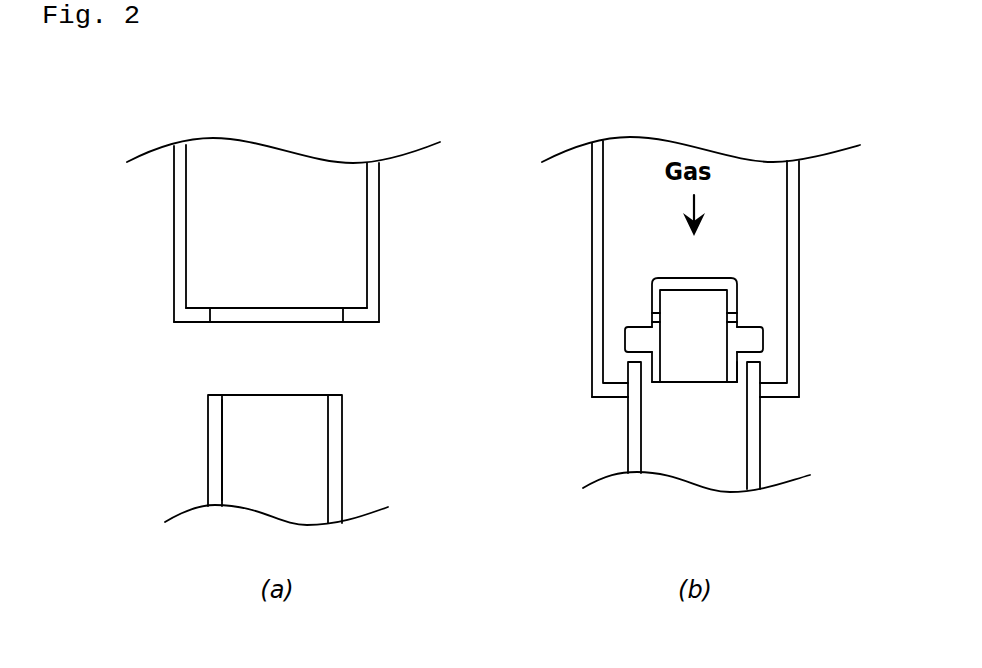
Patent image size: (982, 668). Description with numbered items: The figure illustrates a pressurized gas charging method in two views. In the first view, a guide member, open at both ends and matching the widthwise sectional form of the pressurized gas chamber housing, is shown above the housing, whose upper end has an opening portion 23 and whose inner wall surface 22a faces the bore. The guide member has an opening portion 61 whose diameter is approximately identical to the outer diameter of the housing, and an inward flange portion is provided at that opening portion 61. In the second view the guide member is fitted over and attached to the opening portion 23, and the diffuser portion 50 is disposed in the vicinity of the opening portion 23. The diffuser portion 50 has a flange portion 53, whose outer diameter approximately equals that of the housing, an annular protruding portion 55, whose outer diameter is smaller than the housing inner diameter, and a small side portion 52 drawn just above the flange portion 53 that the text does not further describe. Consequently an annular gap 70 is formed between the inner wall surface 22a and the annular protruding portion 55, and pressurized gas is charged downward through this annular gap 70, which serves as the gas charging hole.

The inner wall surface 22a is at (222, 453).
The opening portion 23 is at (270, 395).
The diffuser portion 50 is at (698, 272).
The seal ring 52 is at (652, 317).
The flange portion 53 is at (630, 339).
The annular protruding portion 55 is at (655, 383).
The opening portion 61 is at (243, 307).
The annular gap 70 is at (741, 380).